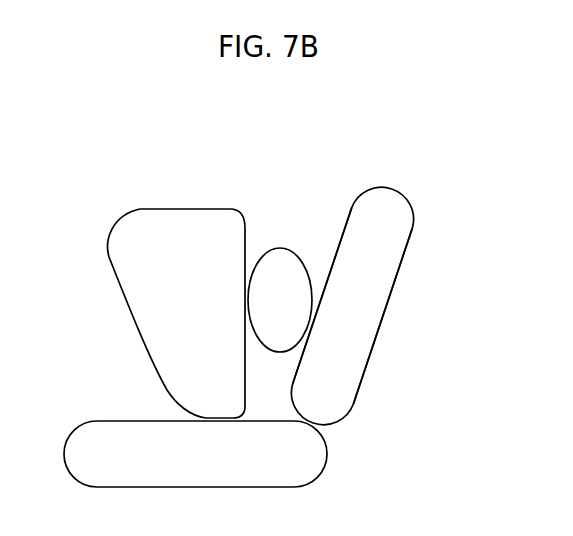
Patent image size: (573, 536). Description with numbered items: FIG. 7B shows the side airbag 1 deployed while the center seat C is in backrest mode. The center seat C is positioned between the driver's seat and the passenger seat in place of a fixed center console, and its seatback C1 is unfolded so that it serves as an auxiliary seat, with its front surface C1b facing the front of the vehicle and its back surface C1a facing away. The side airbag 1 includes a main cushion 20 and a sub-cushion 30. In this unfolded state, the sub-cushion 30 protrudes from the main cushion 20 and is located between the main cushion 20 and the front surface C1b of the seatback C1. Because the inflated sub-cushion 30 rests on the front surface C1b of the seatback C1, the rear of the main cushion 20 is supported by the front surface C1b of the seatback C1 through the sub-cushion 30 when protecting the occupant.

The side airbag 1 is at (200, 166).
The main cushion 20 is at (144, 223).
The sub-cushion 30 is at (282, 262).
The center seat C is at (308, 453).
The seatback C1 is at (357, 355).
The back surface C1a is at (400, 273).
The front surface C1b is at (345, 228).